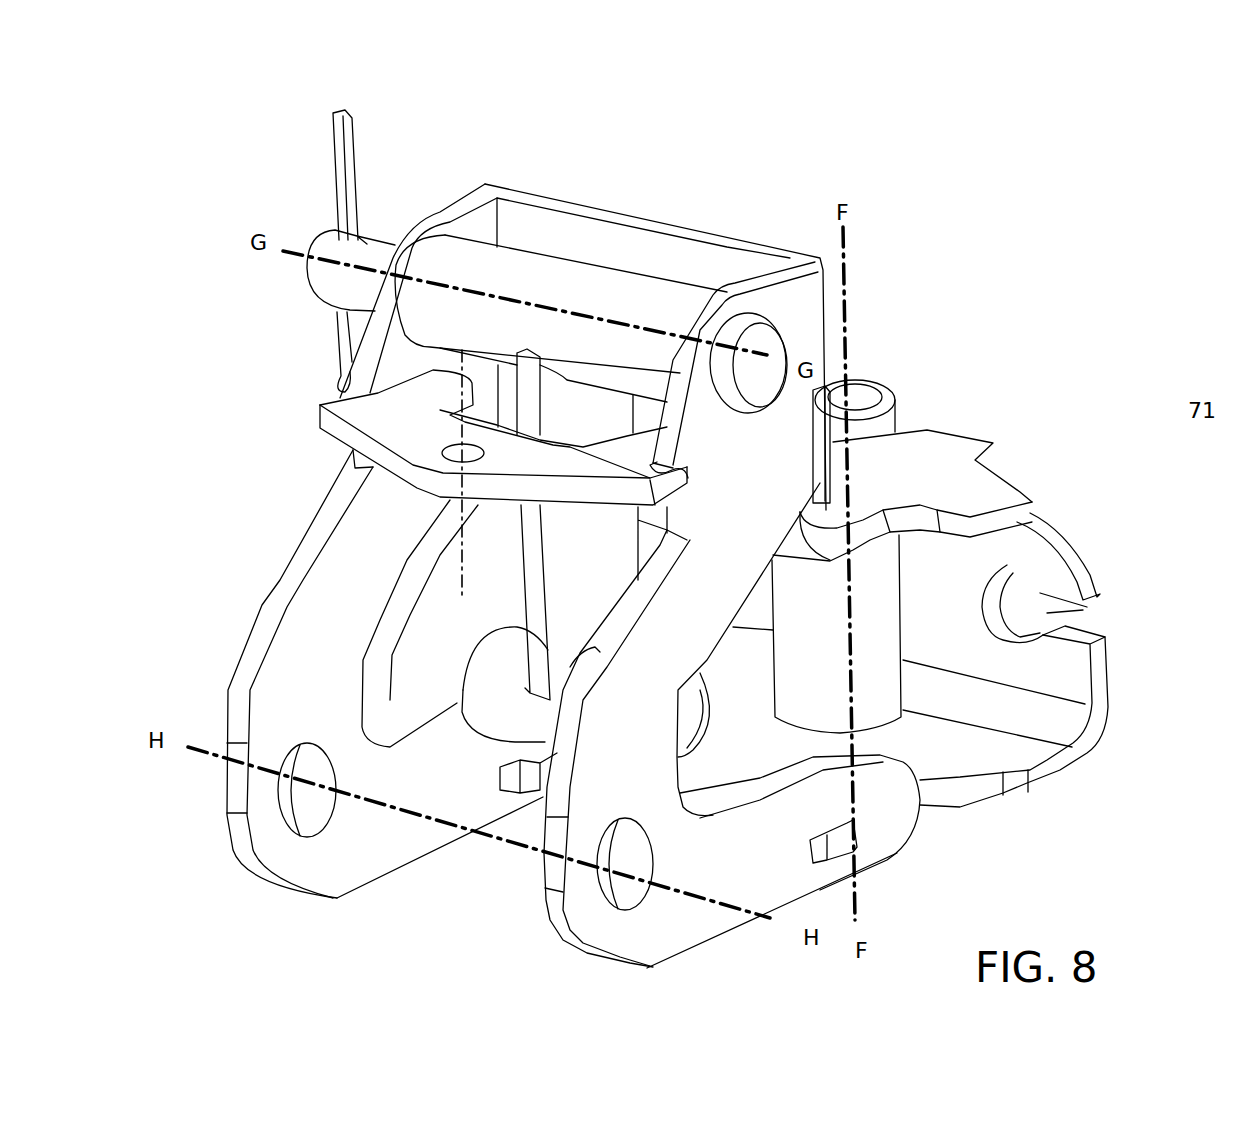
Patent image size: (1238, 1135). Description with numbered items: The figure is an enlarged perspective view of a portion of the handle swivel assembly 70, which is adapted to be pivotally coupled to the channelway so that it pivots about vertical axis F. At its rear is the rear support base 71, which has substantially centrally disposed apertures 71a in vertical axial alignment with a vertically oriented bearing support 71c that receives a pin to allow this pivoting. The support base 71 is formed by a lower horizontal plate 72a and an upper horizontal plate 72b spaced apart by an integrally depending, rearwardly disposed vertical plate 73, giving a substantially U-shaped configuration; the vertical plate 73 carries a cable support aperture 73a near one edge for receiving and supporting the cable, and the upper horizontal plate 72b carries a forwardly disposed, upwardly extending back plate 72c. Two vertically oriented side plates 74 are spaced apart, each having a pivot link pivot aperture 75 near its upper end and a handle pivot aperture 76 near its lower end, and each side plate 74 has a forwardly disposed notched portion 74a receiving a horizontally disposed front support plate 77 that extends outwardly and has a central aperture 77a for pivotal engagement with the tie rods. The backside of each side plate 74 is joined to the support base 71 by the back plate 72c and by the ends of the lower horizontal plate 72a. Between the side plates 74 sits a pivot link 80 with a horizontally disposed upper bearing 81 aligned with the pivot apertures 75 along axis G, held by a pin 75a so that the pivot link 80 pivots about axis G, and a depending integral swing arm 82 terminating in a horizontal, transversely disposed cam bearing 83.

The handle swivel assembly 70 is at (490, 945).
The rear support base 71 is at (1066, 546).
The apertures 71a is at (893, 433).
The bearing support 71c is at (880, 560).
The lower horizontal plate 72a is at (1010, 757).
The upper horizontal plate 72b is at (965, 443).
The back plate 72c is at (820, 450).
The vertical plate 73 is at (1073, 673).
The cable support aperture 73a is at (1087, 603).
The side plate 74 is at (293, 858).
The notched portion 74a is at (678, 457).
The pivot link pivot aperture 75 is at (758, 317).
The pin 75a is at (358, 252).
The handle pivot aperture / rear support plate 76 is at (570, 217).
The front support plate 77 is at (370, 420).
The aperture 77a is at (483, 447).
The pivot link 80 is at (399, 320).
The upper bearing 81 is at (443, 253).
The swing arm 82 is at (560, 648).
The cam bearing 83 is at (483, 703).